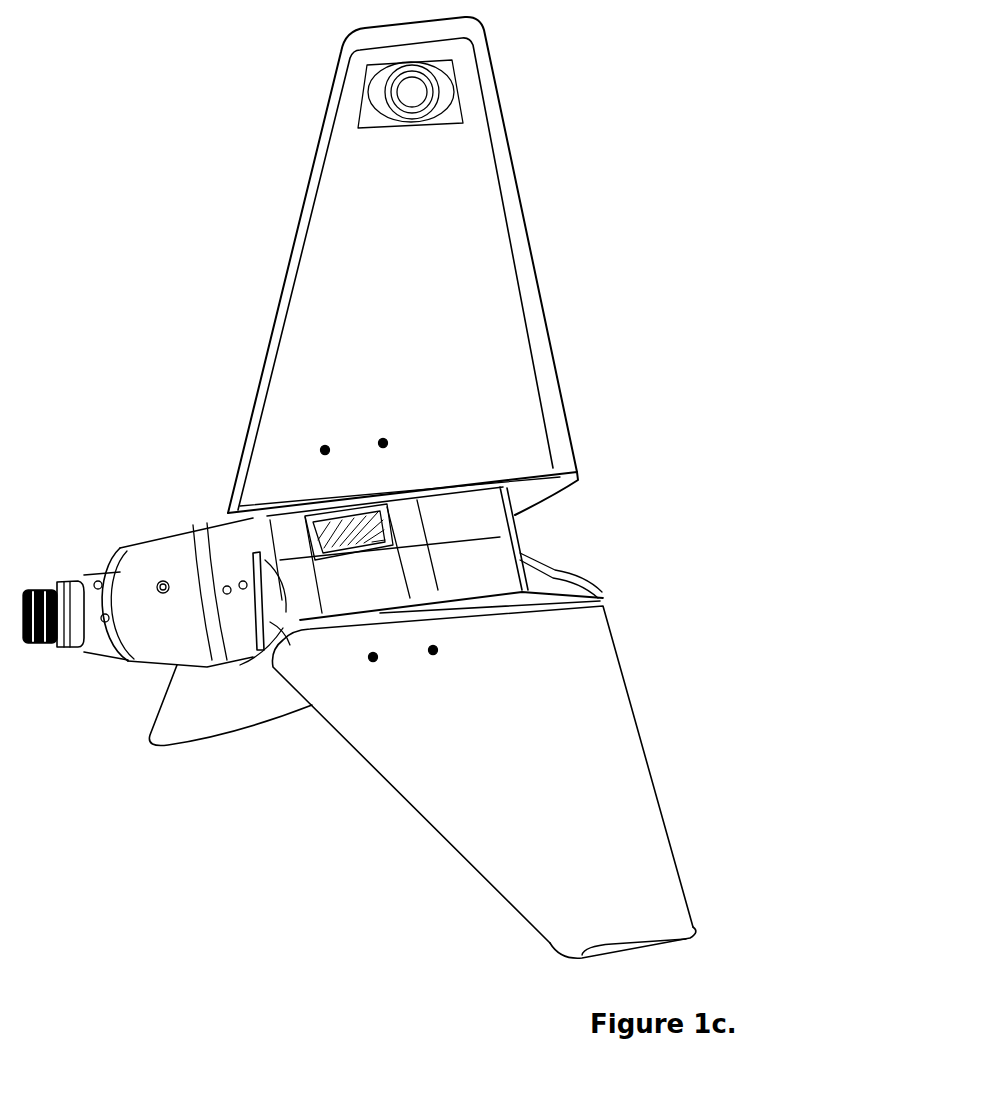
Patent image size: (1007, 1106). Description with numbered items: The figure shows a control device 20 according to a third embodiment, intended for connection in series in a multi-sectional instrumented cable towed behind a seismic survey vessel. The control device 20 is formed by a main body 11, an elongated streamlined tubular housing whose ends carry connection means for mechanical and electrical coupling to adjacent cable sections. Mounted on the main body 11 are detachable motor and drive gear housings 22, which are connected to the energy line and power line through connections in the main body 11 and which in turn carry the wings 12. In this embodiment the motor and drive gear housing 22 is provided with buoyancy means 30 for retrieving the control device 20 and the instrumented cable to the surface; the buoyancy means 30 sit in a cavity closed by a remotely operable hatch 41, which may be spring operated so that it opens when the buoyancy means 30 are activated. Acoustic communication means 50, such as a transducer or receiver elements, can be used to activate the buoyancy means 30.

The control device 20 is at (176, 243).
The wings 12 is at (443, 217).
The acoustic communication means 50 is at (465, 93).
The main body 11 is at (150, 528).
The motor and drive gear housings 22 is at (476, 516).
The buoyancy means 30 is at (322, 517).
The hatch 41 is at (333, 533).